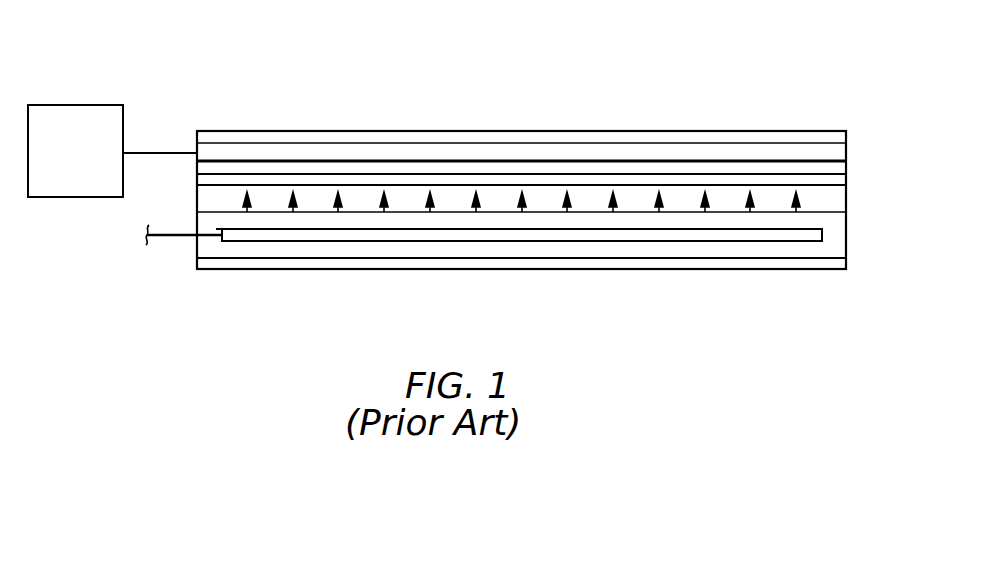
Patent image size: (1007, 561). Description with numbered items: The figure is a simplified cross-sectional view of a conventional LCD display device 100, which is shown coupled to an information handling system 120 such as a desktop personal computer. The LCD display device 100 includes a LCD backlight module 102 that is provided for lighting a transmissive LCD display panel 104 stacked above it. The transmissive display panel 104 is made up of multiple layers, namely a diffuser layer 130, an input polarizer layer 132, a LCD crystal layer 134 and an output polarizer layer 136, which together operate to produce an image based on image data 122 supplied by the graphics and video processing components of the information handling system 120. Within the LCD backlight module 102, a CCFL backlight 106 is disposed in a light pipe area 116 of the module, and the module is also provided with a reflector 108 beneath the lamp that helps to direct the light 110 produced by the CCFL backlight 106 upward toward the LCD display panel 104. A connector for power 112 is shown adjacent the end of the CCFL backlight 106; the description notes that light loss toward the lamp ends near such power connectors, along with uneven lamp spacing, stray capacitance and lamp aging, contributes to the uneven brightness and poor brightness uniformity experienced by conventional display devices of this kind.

The LCD display device 100 is at (230, 130).
The LCD backlight module 102 is at (534, 240).
The transmissive LCD display panel 104 is at (568, 122).
The CCFL backlight 106 is at (793, 235).
The reflector 108 is at (675, 262).
The light 110 is at (243, 218).
The connectors for power 112 is at (172, 238).
The light pipe area 116 is at (215, 228).
The information handling system 120 is at (54, 165).
The image data 122 is at (172, 150).
The diffuser layer 130 is at (852, 187).
The input polarizer layer 132 is at (722, 167).
The LCD crystal layer 134 is at (663, 153).
The output polarizer layer 136 is at (602, 140).